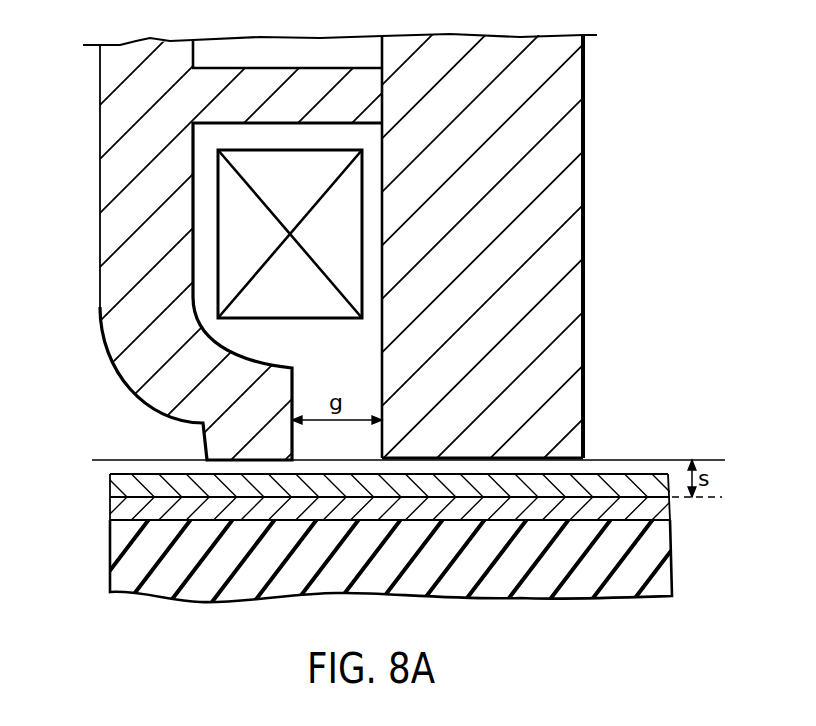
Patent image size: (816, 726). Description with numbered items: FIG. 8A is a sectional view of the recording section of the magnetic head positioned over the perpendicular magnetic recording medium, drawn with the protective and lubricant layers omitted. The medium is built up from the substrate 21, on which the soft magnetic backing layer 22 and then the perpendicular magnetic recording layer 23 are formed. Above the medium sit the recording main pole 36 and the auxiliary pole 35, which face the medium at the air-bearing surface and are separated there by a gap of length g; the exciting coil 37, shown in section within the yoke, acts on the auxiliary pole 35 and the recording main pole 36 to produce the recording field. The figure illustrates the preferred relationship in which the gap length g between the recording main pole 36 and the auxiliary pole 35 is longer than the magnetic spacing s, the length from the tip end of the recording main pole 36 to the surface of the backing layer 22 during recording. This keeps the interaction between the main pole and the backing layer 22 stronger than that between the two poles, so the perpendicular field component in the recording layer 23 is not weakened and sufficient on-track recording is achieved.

The substrate 21 is at (118, 573).
The soft magnetic backing layer 22 is at (118, 512).
The perpendicular magnetic recording layer 23 is at (118, 487).
The auxiliary pole 35 is at (565, 242).
The recording main pole 36 is at (105, 243).
The exciting coil 37 is at (230, 182).